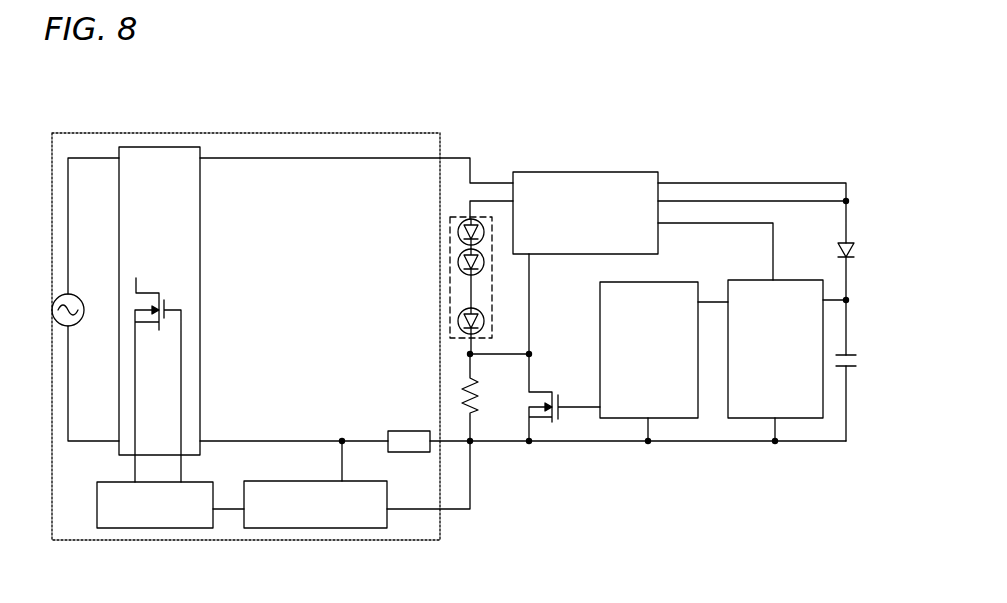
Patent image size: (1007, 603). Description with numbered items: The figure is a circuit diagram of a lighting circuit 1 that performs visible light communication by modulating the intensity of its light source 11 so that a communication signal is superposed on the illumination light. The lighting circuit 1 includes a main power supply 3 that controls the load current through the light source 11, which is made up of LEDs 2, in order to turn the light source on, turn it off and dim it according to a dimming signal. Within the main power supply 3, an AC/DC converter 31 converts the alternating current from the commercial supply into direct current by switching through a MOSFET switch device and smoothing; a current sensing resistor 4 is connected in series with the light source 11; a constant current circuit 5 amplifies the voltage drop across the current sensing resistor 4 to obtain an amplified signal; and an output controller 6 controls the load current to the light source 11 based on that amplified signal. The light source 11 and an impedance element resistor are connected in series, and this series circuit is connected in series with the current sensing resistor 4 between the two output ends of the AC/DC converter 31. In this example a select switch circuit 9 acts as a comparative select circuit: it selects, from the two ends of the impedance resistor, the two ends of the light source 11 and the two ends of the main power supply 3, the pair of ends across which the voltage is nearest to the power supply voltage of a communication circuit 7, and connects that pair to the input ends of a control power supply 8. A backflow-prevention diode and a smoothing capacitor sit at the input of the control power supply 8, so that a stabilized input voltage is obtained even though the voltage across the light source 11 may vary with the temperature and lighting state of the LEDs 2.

The lighting circuit 1 is at (50, 130).
The main power supply 3 is at (385, 133).
The AC/DC converter 31 is at (200, 217).
The LEDs 2 is at (457, 236).
The light source 11 is at (456, 217).
The current sensing resistor 4 is at (410, 431).
The constant current circuit 5 is at (318, 528).
The output controller 6 is at (157, 528).
The communication circuit 7 is at (670, 282).
The control power supply 8 is at (785, 280).
The select switch circuit 9 is at (618, 172).